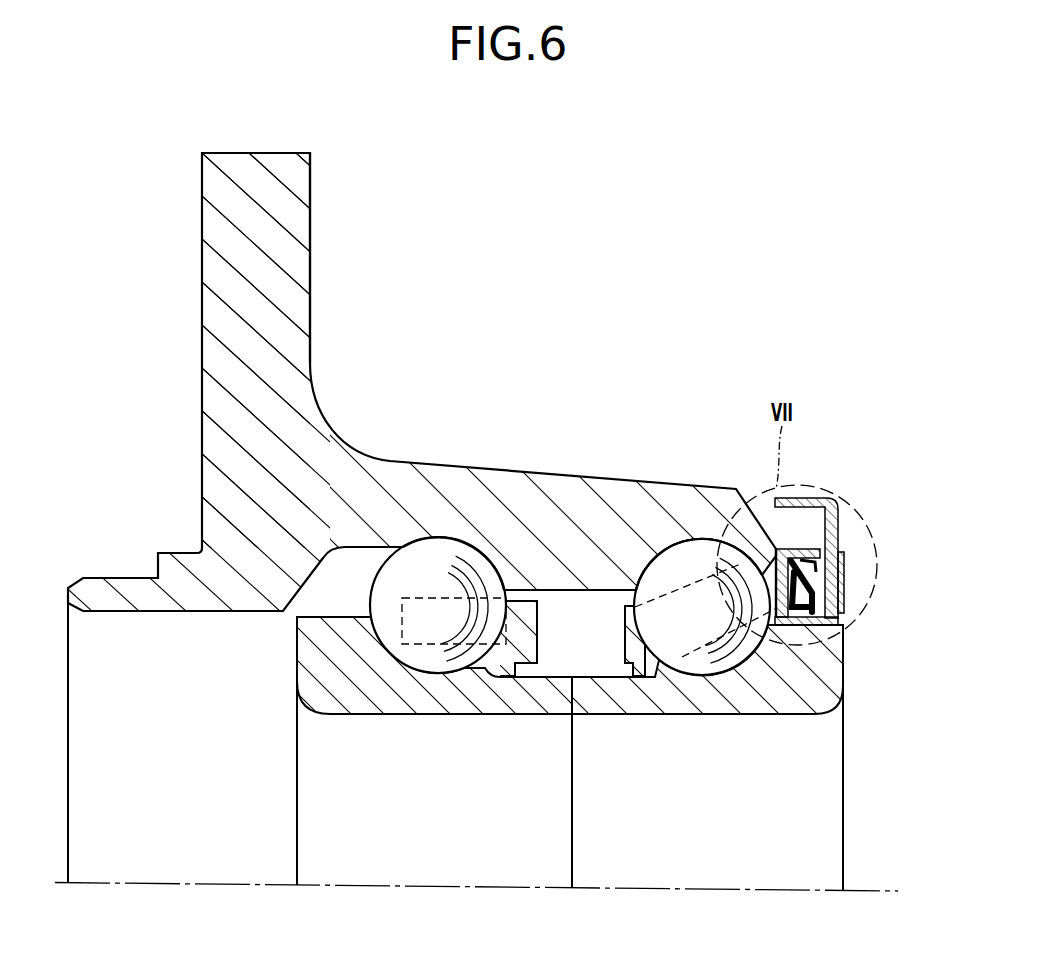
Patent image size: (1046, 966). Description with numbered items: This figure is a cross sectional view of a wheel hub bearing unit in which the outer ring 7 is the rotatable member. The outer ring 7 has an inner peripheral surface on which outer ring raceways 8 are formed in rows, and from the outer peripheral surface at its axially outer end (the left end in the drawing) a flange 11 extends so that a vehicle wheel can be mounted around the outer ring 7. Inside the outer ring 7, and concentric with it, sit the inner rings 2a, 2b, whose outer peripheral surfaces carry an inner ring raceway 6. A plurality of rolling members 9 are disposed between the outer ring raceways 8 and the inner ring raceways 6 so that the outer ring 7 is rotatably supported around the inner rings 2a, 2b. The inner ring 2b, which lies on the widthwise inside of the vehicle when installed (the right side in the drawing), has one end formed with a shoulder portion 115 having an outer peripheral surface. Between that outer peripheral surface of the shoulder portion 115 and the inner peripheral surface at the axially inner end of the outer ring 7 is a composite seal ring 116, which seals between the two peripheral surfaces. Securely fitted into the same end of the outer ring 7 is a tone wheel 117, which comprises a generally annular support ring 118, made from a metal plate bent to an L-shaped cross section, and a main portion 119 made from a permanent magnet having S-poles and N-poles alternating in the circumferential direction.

The inner ring 2a is at (313, 672).
The inner ring 2b is at (822, 683).
The inner ring raceway 6 is at (435, 672).
The outer ring 7 is at (400, 475).
The outer ring raceway 8 is at (441, 540).
The rolling member 9 is at (478, 563).
The flange 11 is at (298, 207).
The shoulder portion 115 is at (843, 628).
The composite seal ring 116 is at (858, 545).
The tone wheel 117 is at (816, 498).
The support ring 118 is at (836, 510).
The main portion 119 is at (855, 572).